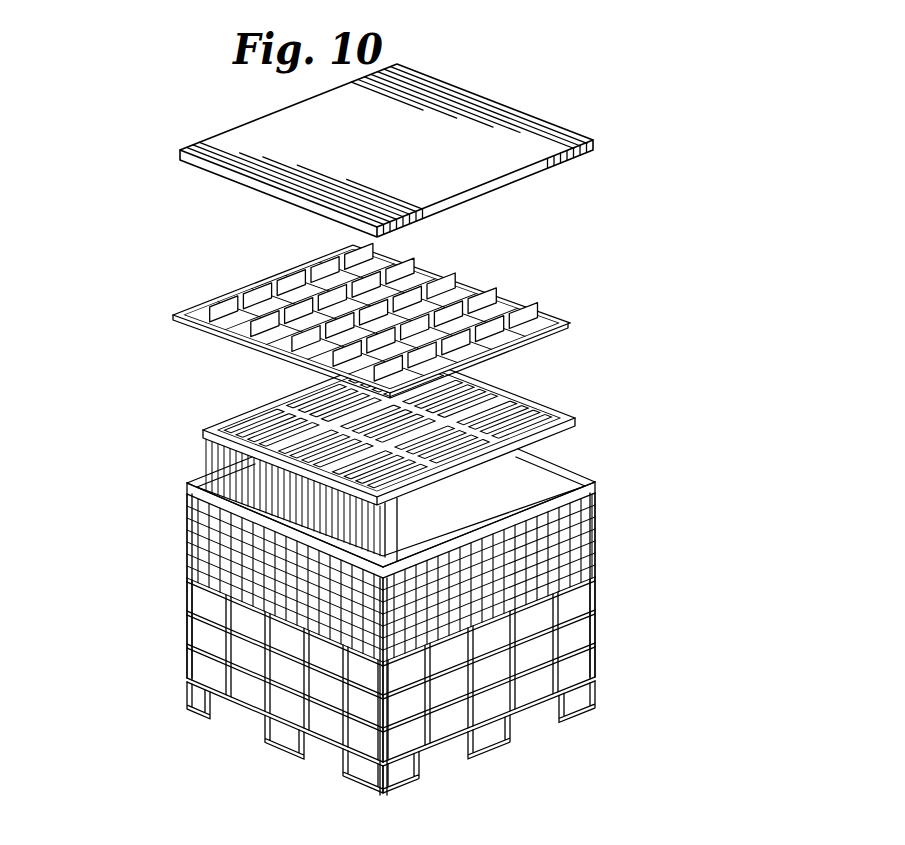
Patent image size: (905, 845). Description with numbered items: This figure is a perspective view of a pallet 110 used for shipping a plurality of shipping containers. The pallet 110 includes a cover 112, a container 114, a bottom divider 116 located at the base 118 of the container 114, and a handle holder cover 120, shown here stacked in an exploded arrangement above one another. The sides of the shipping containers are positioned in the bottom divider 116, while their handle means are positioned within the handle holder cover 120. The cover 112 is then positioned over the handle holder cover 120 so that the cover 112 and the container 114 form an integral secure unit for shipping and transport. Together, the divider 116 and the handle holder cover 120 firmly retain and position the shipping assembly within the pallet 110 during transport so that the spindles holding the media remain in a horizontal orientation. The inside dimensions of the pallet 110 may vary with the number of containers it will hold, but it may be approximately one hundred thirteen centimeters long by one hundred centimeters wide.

The pallet 110 is at (742, 698).
The cover 112 is at (248, 130).
The container 114 is at (380, 617).
The bottom divider 116 is at (557, 403).
The base 118 is at (187, 650).
The handle holder cover 120 is at (483, 293).